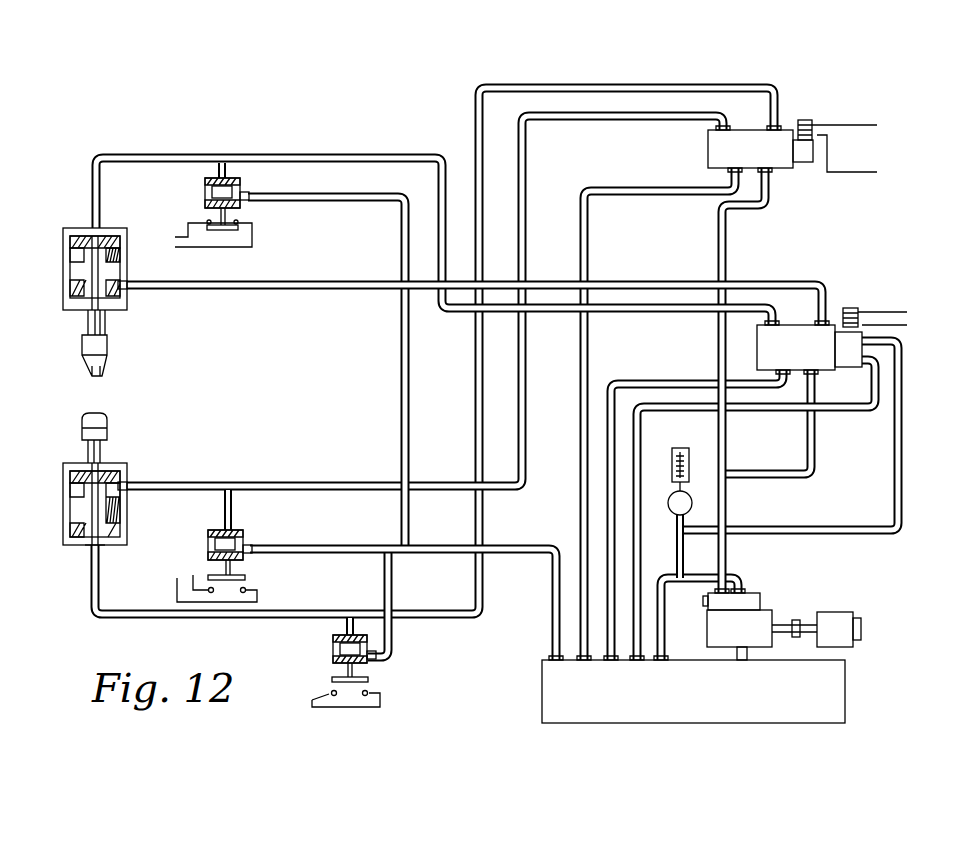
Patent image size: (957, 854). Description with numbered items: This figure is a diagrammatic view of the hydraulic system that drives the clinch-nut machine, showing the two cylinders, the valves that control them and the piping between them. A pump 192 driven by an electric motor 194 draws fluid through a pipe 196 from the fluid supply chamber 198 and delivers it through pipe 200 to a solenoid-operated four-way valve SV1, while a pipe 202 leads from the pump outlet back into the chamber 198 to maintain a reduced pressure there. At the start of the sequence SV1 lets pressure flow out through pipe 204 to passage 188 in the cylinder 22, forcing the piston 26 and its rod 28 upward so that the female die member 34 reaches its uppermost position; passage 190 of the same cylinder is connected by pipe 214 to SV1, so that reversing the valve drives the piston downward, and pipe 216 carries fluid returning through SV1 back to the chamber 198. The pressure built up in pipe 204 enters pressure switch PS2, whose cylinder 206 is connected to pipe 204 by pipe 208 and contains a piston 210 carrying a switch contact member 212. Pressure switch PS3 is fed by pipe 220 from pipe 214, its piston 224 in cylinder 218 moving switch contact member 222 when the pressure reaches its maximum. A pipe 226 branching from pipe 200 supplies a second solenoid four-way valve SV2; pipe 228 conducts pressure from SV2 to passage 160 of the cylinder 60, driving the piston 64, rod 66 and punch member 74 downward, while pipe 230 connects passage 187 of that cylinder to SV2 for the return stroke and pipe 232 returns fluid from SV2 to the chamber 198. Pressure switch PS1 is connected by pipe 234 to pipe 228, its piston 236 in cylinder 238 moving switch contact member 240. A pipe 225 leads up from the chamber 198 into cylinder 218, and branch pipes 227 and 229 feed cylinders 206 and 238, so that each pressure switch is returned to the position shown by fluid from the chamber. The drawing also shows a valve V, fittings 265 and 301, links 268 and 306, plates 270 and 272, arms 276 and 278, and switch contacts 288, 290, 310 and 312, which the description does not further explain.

The cylinder 22 is at (89, 520).
The piston 26 is at (80, 522).
The rod 28 is at (88, 450).
The female die member 34 is at (107, 428).
The cylinder 60 is at (91, 255).
The piston 64 is at (75, 252).
The rod 66 is at (88, 322).
The punch member 74 is at (88, 346).
The passage 160 is at (88, 238).
The passage 187 is at (116, 283).
The passage 188 is at (95, 538).
The passage 190 is at (114, 504).
The pump 192 is at (762, 617).
The electric motor 194 is at (840, 620).
The pipe 196 is at (748, 652).
The fluid supply chamber 198 is at (559, 678).
The pipe 200 is at (727, 248).
The pipe 202 is at (738, 580).
The pipe 204 is at (684, 85).
The cylinder 206 is at (318, 659).
The pipe 208 is at (345, 625).
The piston 210 is at (333, 650).
The switch contact member 212 is at (368, 680).
The pipe 214 is at (590, 120).
The pipe 216 is at (655, 196).
The cylinder 218 is at (210, 543).
The pipe 220 is at (233, 505).
The switch contact member 222 is at (245, 578).
The piston 224 is at (194, 528).
The pipe 225 is at (522, 544).
The pipe 226 is at (817, 444).
The pipe 227 is at (393, 588).
The pipe 228 is at (130, 153).
The pipe 229 is at (400, 378).
The pipe 230 is at (349, 291).
The pipe 232 is at (665, 380).
The pipe 234 is at (227, 170).
The piston 236 is at (195, 195).
The cylinder 238 is at (210, 200).
The switch contact member 240 is at (228, 232).
The pressure switch PS1 is at (250, 195).
The pressure switch PS2 is at (376, 657).
The pressure switch PS3 is at (250, 547).
The adjusting nut 265 is at (805, 118).
The return line 268 is at (907, 323).
The actuating plate 270 is at (188, 238).
The bracket 272 is at (252, 238).
The arm 276 is at (858, 174).
The arm 278 is at (862, 124).
The switch contact 288 is at (312, 700).
The limit switch 290 is at (362, 707).
The adjusting nut 301 is at (849, 306).
The drain line 306 is at (876, 310).
The switch contact 310 is at (193, 575).
The limit switch 312 is at (257, 597).
The solenoid valve SV1 is at (708, 155).
The four-way valve SV2 is at (768, 347).
The manual valve V is at (676, 500).